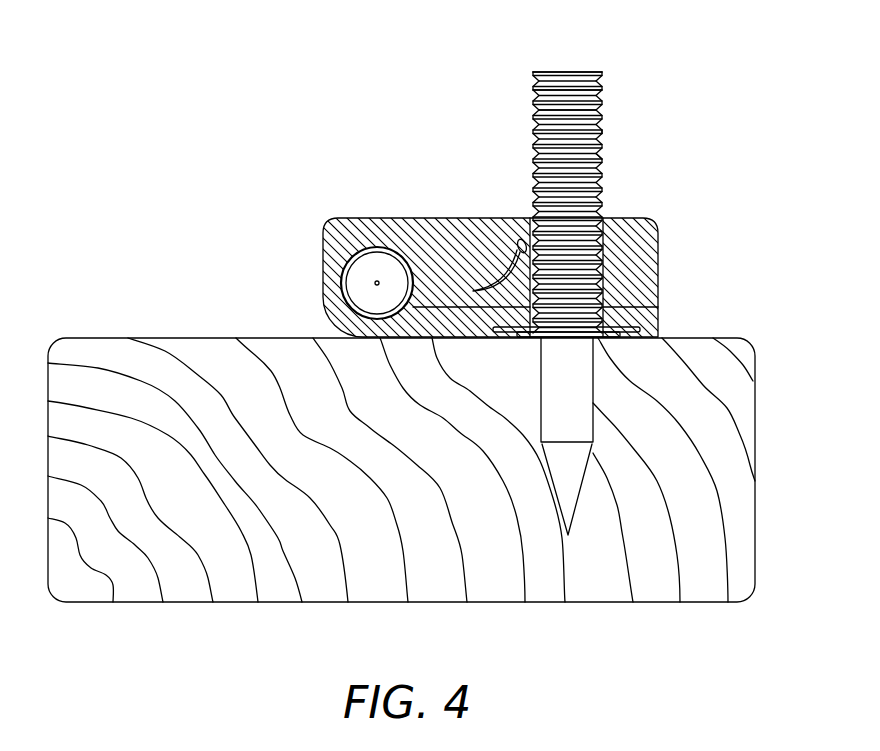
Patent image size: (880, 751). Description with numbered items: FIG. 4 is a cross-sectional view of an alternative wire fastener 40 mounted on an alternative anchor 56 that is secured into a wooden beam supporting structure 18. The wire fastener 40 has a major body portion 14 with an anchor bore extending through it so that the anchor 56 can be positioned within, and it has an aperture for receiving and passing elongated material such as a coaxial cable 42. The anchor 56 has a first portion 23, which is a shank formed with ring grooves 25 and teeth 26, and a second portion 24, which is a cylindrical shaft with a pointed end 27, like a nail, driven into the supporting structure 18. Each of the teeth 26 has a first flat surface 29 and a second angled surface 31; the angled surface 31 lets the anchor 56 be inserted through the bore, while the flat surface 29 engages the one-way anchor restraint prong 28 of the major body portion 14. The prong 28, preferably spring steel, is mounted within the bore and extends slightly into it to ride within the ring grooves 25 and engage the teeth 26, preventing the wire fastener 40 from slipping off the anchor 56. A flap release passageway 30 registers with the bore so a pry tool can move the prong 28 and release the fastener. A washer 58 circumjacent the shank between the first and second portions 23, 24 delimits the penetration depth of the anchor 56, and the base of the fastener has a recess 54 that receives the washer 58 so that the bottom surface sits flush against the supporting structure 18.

The major body portion 14 is at (658, 263).
The wooden beam supporting structure 18 is at (75, 338).
The first portion 23 is at (600, 193).
The second portion 24 is at (540, 420).
The ring grooves 25 is at (600, 128).
The teeth 26 is at (600, 148).
The pointed end 27 is at (568, 537).
The one-way anchor restraint prong 28 is at (490, 224).
The first flat surface 29 is at (538, 115).
The flap release passageway 30 is at (522, 243).
The second angled surface 31 is at (536, 94).
The wire fastener 40 is at (390, 106).
The coaxial cable 42 is at (377, 283).
The recess 54 is at (502, 338).
The anchor 56 is at (553, 70).
The washer 58 is at (632, 338).